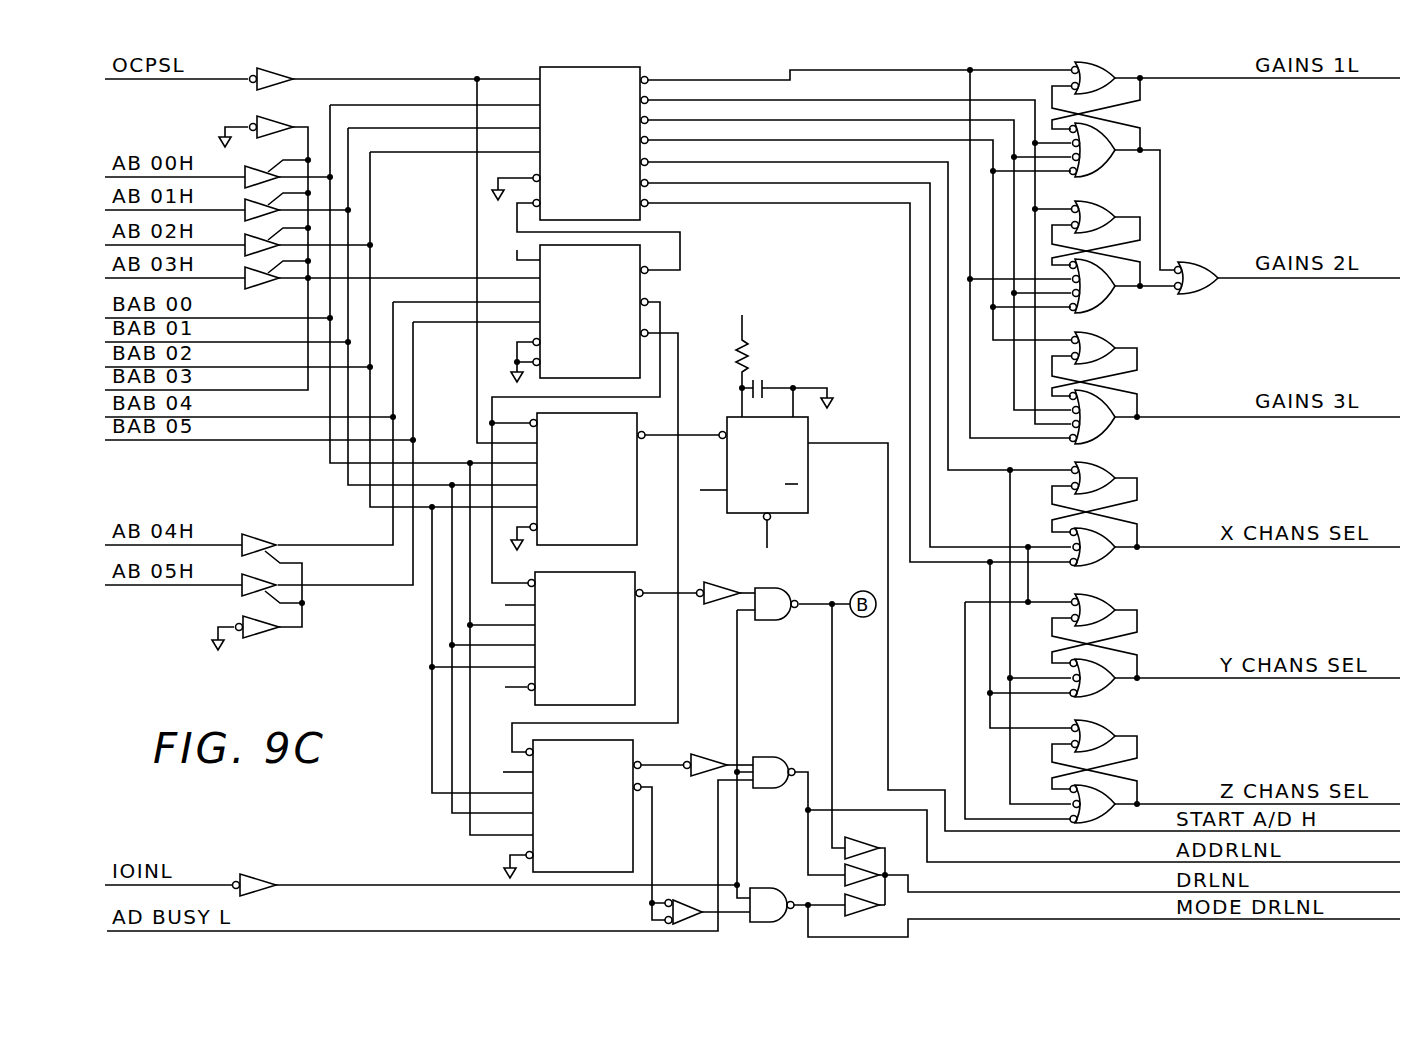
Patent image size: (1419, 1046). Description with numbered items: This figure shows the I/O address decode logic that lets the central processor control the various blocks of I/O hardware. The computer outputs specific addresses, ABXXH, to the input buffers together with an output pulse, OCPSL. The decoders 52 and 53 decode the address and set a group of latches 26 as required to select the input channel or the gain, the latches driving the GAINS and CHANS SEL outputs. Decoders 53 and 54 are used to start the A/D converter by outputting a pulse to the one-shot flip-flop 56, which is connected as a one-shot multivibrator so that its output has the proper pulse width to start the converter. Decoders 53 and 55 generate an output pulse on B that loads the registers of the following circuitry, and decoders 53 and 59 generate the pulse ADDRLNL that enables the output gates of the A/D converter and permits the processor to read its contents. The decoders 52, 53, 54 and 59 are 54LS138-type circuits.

The group of latches 26 is at (778, 62).
The decoder 52 is at (587, 67).
The decoder 53 is at (637, 288).
The decoder 54 is at (610, 538).
The decoder 55 is at (620, 690).
The one-shot flip-flop 56 is at (798, 503).
The decoder 59 is at (603, 865).